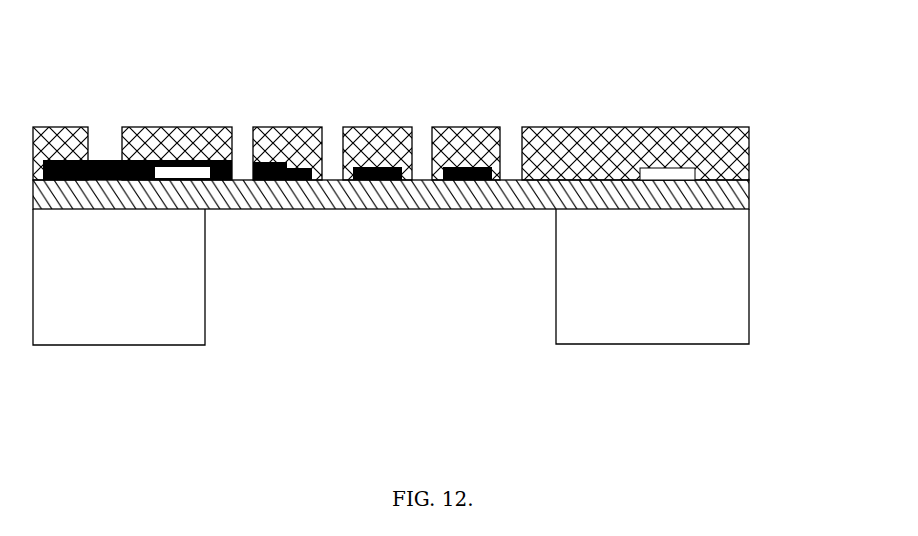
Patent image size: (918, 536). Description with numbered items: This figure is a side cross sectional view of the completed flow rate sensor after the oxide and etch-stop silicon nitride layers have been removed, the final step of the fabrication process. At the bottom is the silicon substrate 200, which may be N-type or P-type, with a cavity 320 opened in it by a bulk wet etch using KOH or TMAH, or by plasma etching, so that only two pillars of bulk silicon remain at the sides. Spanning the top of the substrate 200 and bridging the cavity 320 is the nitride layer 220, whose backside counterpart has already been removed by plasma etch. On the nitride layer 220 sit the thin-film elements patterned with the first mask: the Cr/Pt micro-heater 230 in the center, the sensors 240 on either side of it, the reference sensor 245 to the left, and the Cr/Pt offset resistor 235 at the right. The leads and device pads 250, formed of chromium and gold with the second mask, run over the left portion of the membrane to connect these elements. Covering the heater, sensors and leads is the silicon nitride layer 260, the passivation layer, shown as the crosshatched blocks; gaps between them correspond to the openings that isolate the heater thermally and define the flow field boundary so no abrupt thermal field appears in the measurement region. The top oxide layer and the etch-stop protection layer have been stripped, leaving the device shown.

The substrate 200 is at (718, 281).
The nitride layer 220 is at (725, 192).
The Cr/Pt micro-heater 230 is at (377, 165).
The Cr/Pt offset resistor 235 is at (668, 158).
The sensors 240 is at (438, 142).
The reference sensor 245 is at (186, 160).
The leads and device pads 250 is at (112, 160).
The silicon nitride layer 260 is at (733, 142).
The cavity 320 is at (323, 283).